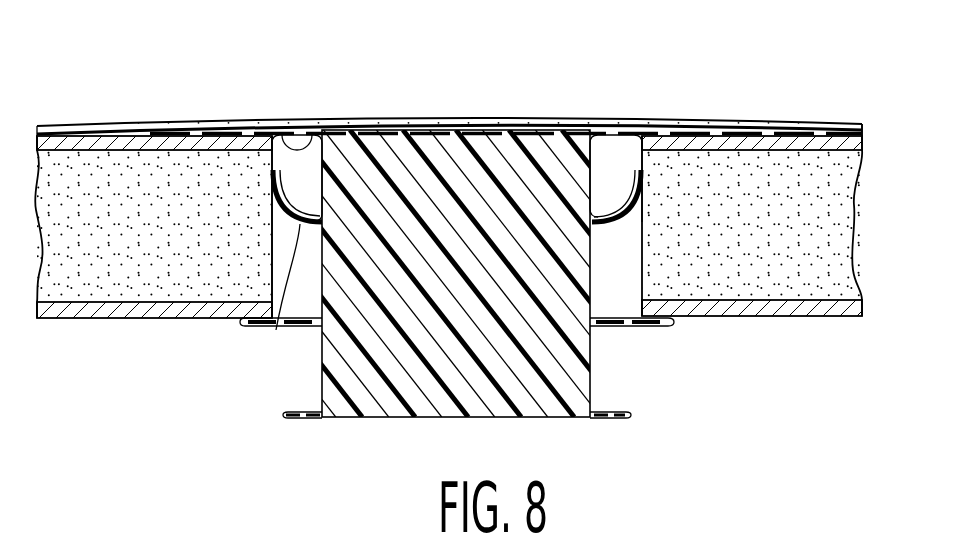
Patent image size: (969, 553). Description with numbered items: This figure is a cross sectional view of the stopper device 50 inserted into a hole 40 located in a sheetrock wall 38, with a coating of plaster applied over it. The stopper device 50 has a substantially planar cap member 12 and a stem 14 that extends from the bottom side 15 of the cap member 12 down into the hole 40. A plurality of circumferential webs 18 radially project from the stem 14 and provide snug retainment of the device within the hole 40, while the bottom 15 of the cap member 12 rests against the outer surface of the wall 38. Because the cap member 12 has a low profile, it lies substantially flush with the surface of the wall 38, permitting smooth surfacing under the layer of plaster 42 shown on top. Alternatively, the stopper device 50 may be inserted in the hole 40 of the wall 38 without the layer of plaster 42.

The cap member 12 is at (478, 123).
The stem 14 is at (593, 285).
The bottom side of the cap member 15 is at (314, 138).
The circumferential webs 18 is at (303, 323).
The sheetrock wall 38 is at (858, 222).
The hole 40 is at (622, 163).
The layer of plaster 42 is at (667, 118).
The stopper device 50 is at (471, 278).